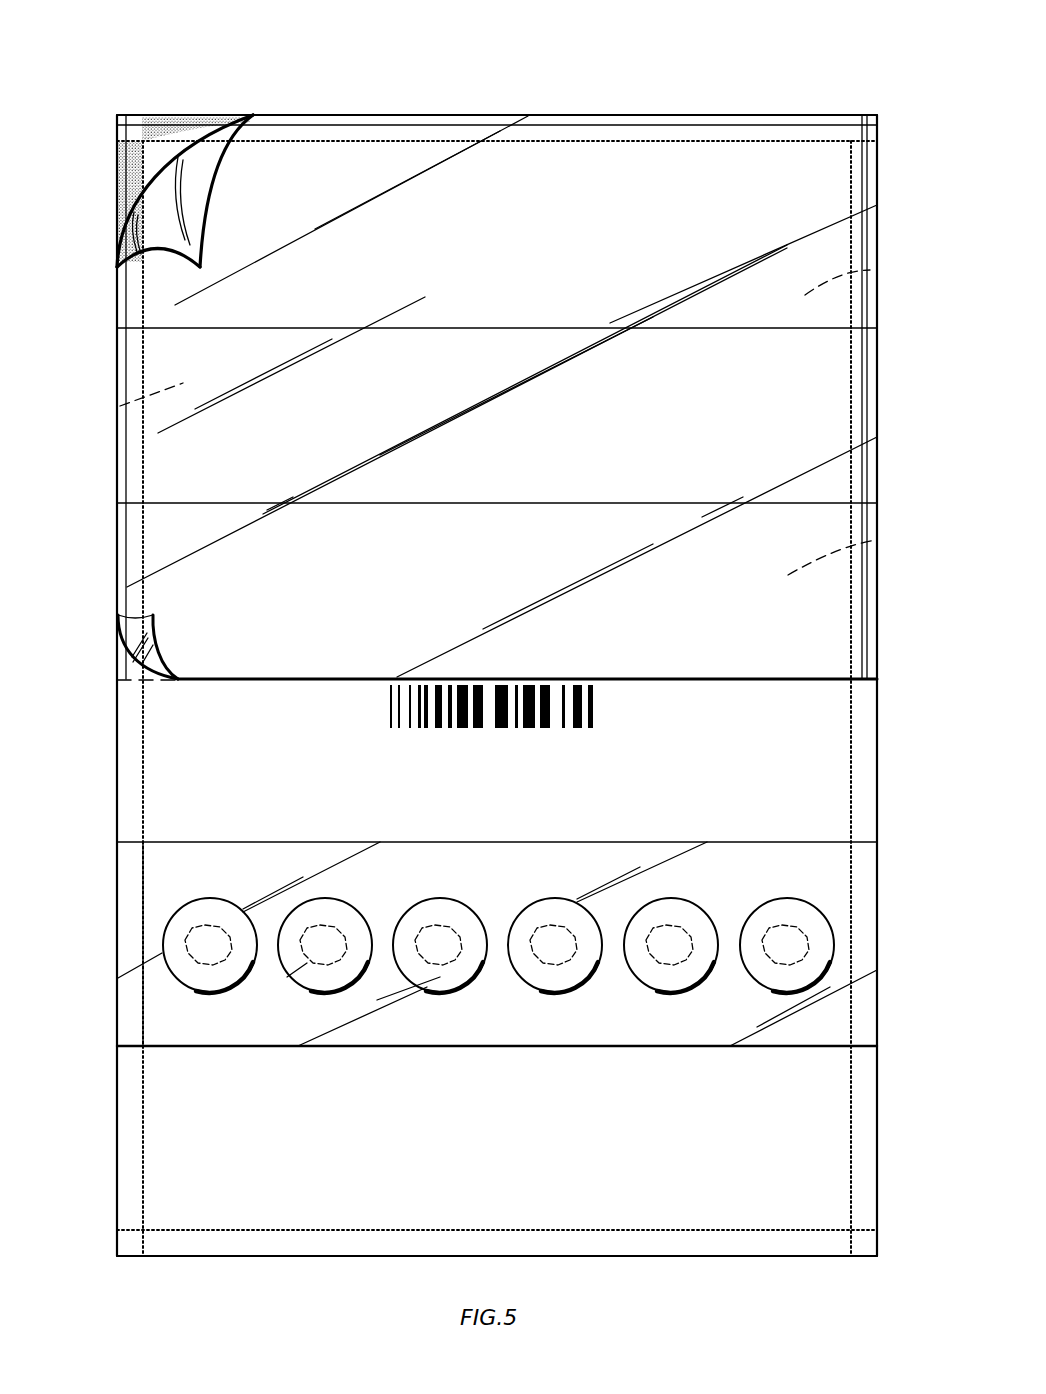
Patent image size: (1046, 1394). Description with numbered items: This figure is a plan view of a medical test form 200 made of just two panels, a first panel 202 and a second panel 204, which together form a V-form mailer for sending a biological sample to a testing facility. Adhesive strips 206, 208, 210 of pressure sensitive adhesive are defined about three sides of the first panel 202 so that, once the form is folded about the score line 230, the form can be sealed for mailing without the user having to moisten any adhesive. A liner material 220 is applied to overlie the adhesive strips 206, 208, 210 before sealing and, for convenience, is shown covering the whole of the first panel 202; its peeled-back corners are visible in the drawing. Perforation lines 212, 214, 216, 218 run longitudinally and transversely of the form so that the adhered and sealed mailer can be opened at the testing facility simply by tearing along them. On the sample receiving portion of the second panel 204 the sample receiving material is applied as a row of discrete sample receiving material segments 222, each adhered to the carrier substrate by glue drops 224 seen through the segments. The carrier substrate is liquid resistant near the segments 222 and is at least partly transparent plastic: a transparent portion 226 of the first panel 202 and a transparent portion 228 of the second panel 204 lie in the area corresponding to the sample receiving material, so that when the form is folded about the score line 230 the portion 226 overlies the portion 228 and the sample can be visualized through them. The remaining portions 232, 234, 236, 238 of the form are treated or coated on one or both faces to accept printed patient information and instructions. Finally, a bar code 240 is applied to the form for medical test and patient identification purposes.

The medical test form 200 is at (612, 74).
The first panel 202 is at (215, 117).
The second panel 204 is at (118, 750).
The adhesive strip 206 is at (125, 660).
The adhesive strip 208 is at (165, 133).
The adhesive strip 210 is at (877, 381).
The perforation line 212 is at (143, 895).
The perforation line 214 is at (852, 897).
The perforation line 216 is at (406, 150).
The perforation line 218 is at (666, 1230).
The liner material 220 is at (163, 240).
The sample receiving material segments 222 is at (310, 900).
The glue drops 224 is at (290, 970).
The transparent portion of first panel 226 is at (120, 406).
The transparent portion of second panel 228 is at (157, 910).
The score line 230 is at (167, 680).
The remaining portion 232 is at (878, 270).
The remaining portion 234 is at (877, 540).
The remaining portion 236 is at (158, 777).
The remaining portion 238 is at (185, 1155).
The bar code 240 is at (600, 711).